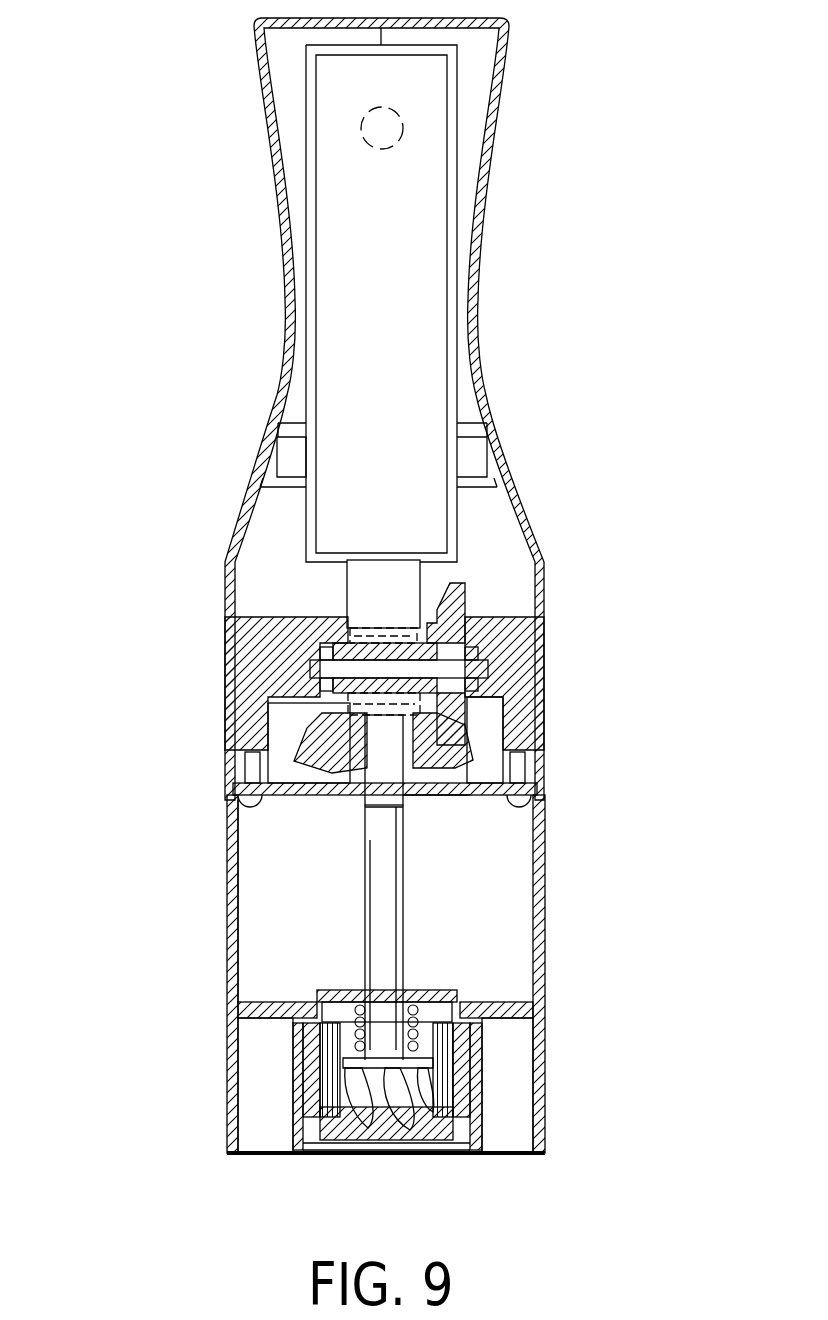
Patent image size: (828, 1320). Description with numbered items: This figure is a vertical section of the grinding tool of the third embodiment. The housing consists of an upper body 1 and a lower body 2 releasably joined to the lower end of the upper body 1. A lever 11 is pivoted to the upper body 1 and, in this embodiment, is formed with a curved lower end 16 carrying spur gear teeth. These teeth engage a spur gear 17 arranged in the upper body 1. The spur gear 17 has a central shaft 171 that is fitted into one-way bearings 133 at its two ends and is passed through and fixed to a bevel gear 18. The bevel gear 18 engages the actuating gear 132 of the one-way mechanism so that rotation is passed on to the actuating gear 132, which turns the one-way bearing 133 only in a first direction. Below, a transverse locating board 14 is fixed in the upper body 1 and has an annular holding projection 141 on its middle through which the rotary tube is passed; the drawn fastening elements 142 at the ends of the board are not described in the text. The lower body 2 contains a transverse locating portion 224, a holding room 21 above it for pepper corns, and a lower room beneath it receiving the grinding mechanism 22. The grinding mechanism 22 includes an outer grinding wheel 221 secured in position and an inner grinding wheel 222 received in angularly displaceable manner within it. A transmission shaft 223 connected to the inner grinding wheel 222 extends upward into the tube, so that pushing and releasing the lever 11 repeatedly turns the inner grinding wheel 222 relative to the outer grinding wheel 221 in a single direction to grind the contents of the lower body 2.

The upper body 1 is at (495, 300).
The lever 11 is at (427, 190).
The curved lower end 16 is at (348, 585).
The one-way bearing 133 is at (332, 628).
The bevel gear 18 is at (447, 670).
The spur gear 17 is at (395, 632).
The actuating gear 132 is at (320, 727).
The central shaft 171 is at (467, 760).
The annular holding projection 141 is at (327, 770).
The screw 142 is at (380, 803).
The transverse locating board 14 is at (462, 792).
The transmission shaft 223 is at (388, 927).
The lower body 2 is at (555, 983).
The holding room 21 is at (255, 950).
The transverse locating portion 224 is at (320, 982).
The grinding mechanism 22 is at (503, 1075).
The outer grinding wheel 221 is at (303, 1065).
The inner grinding wheel 222 is at (327, 1100).